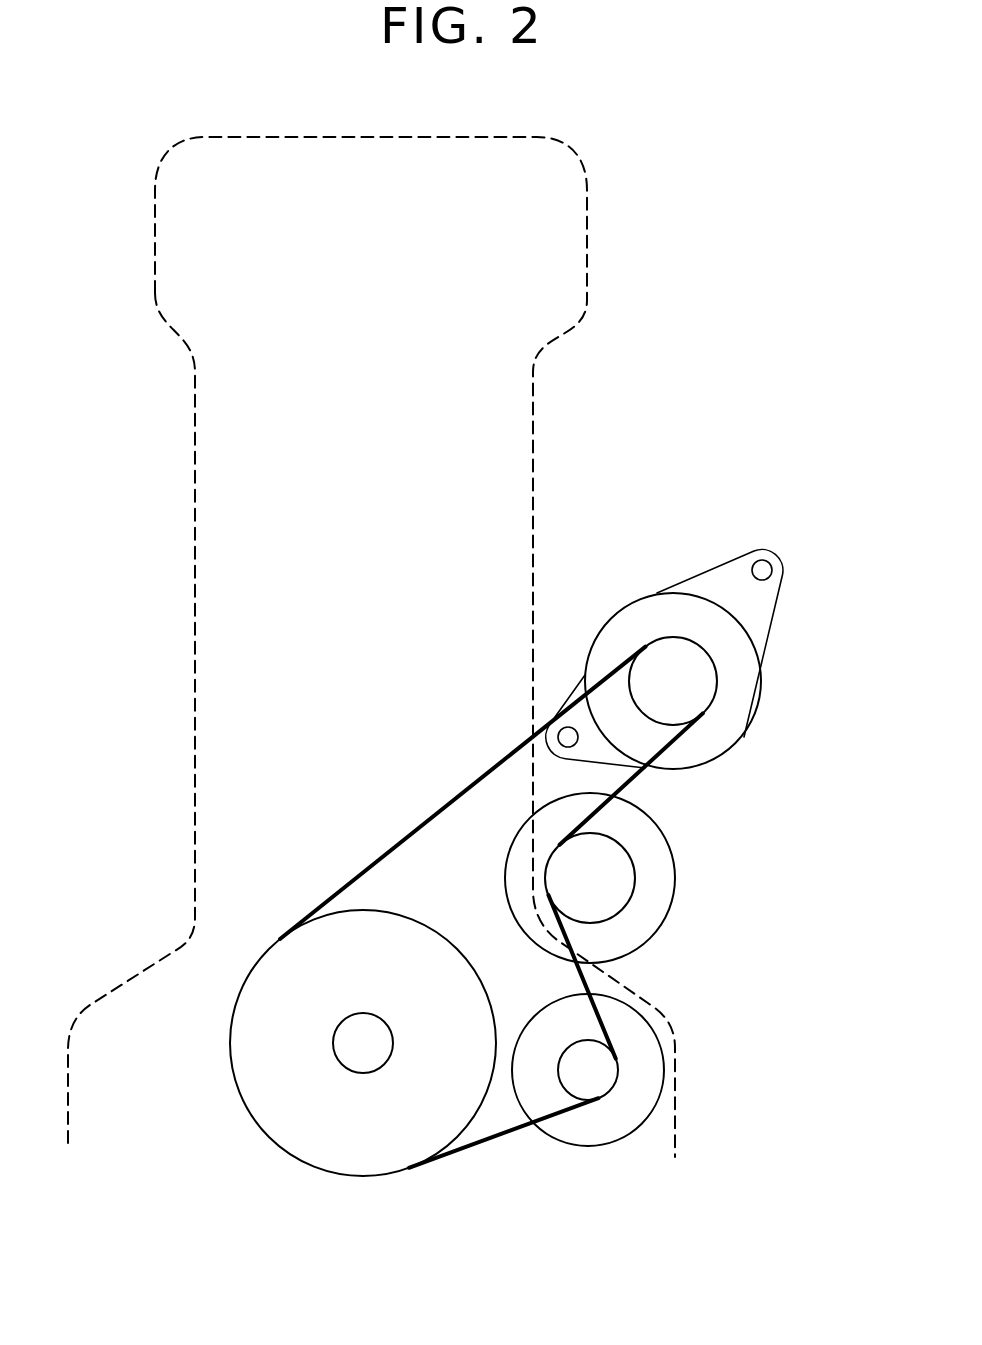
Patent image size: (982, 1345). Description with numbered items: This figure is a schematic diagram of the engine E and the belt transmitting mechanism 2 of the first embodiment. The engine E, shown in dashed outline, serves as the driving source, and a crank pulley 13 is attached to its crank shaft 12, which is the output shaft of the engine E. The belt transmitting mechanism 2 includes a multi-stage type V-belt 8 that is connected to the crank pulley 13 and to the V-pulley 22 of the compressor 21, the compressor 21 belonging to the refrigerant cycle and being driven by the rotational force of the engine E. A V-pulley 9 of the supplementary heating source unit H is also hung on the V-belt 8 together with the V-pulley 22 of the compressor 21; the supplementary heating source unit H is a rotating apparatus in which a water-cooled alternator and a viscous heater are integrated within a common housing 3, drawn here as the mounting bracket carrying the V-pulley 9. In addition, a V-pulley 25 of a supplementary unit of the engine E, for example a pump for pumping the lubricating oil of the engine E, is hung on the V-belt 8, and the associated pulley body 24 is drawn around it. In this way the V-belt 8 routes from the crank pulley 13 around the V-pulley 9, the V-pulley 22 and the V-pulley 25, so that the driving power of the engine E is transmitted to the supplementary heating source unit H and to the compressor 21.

The belt transmitting mechanism 2 is at (310, 1080).
The common housing 3 is at (706, 681).
The multi-stage type V-belt 8 is at (633, 783).
The V-pulley of the supplementary heating source unit 9 is at (705, 675).
The crank shaft 12 is at (358, 1047).
The crank pulley 13 is at (270, 1068).
The compressor 21 is at (632, 878).
The V-pulley of the compressor 22 is at (612, 898).
The tensioner pulley 24 is at (634, 1070).
The V-pulley of a supplementary unit 25 is at (598, 1073).
The engine E is at (587, 208).
The supplementary heating source unit H is at (682, 567).